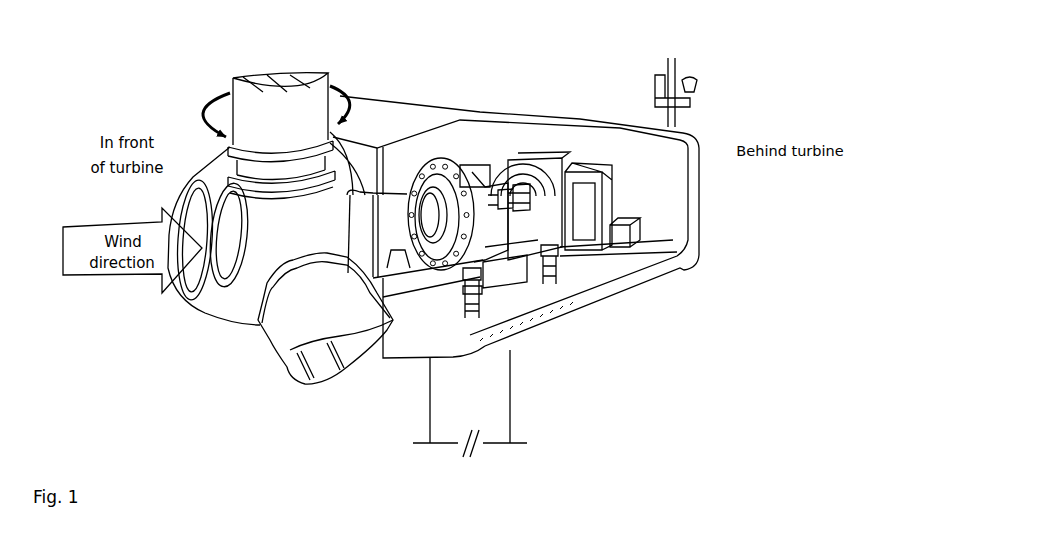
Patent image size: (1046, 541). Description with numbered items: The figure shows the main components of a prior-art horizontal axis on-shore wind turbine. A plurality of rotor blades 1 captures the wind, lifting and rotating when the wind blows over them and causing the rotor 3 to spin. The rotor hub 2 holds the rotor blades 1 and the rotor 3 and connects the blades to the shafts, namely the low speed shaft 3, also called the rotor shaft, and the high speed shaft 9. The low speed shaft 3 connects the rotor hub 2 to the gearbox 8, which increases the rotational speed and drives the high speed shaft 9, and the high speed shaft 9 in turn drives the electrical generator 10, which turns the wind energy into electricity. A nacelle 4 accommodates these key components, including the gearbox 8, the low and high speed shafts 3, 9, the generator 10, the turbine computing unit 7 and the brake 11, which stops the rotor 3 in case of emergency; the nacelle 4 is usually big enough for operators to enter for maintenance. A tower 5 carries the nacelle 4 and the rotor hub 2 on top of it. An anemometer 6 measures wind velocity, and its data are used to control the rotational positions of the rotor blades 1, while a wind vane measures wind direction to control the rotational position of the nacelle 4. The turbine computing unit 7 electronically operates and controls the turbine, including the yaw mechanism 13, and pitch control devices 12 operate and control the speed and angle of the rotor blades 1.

The rotor blades 1 is at (300, 342).
The rotor hub 2 is at (268, 258).
The rotor / low speed shaft 3 is at (412, 213).
The nacelle 4 is at (673, 160).
The tower 5 is at (484, 409).
The anemometer 6 is at (697, 72).
The turbine computing unit 7 is at (630, 233).
The gearbox 8 is at (480, 212).
The high speed shaft 9 is at (516, 199).
The electrical generator 10 is at (543, 173).
The brake 11 is at (478, 173).
The pitch control device 12 is at (653, 73).
The yaw mechanism 13 is at (467, 306).